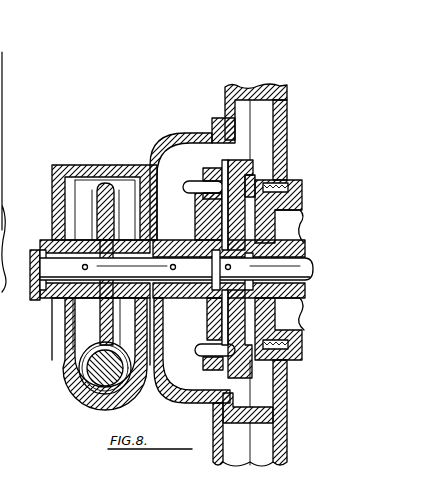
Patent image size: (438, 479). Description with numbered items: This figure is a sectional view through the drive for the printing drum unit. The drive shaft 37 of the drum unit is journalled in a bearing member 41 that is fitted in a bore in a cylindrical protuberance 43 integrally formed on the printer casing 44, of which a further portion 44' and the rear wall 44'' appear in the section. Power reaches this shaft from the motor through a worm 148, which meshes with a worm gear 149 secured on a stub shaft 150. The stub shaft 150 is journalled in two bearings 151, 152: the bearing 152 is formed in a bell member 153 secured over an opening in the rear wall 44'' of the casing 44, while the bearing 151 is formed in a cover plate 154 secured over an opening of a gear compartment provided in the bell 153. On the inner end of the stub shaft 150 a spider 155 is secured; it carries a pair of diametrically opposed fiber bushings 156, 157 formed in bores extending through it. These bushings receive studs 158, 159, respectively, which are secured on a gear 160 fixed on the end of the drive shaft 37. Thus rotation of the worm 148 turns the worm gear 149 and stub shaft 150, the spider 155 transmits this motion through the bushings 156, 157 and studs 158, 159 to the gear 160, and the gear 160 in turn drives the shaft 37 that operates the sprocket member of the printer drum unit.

The shaft 37 is at (306, 272).
The bearing member 41 is at (275, 231).
The cylindrical protuberance 43 is at (300, 348).
The printer casing 44 is at (249, 120).
The printer casing 44' is at (266, 413).
The rear wall 44'' is at (16, 173).
The worm 148 is at (104, 386).
The worm gear 149 is at (108, 186).
The stub shaft 150 is at (176, 270).
The bearing 151 is at (48, 244).
The bearing 152 is at (178, 234).
The bell member 153 is at (196, 133).
The cover plate 154 is at (53, 336).
The spider 155 is at (206, 206).
The fiber bushing 156 is at (200, 181).
The fiber bushing 157 is at (205, 356).
The stud 158 is at (217, 163).
The stud 159 is at (216, 368).
The gear 160 is at (246, 163).